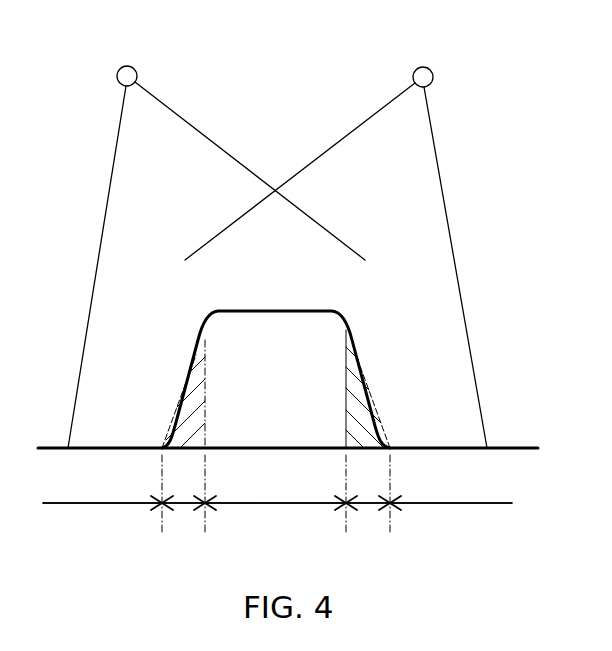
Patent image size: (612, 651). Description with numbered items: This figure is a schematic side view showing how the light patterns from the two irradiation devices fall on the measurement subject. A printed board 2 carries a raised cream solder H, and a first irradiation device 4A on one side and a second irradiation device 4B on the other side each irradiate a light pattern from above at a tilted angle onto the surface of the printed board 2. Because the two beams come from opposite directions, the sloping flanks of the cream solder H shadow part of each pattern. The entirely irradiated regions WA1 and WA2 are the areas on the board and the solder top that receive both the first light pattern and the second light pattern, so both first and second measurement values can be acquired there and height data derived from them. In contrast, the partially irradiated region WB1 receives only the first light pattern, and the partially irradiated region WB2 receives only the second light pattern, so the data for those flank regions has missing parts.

The first irradiation device 4A is at (117, 77).
The second irradiation device 4B is at (433, 78).
The printed board 2 is at (112, 447).
The cream solder H is at (273, 308).
The entirely irradiated region WA1 is at (101, 506).
The partially irradiated region WB1 is at (184, 506).
The entirely irradiated region WA2 is at (277, 506).
The partially irradiated region WB2 is at (368, 506).